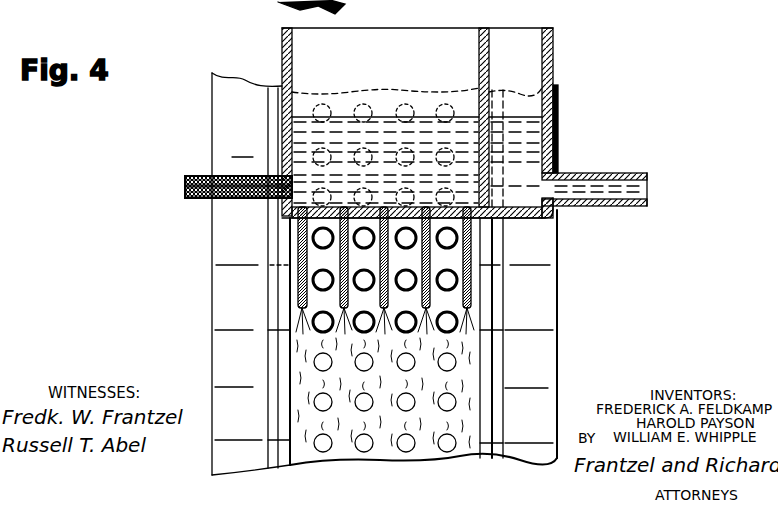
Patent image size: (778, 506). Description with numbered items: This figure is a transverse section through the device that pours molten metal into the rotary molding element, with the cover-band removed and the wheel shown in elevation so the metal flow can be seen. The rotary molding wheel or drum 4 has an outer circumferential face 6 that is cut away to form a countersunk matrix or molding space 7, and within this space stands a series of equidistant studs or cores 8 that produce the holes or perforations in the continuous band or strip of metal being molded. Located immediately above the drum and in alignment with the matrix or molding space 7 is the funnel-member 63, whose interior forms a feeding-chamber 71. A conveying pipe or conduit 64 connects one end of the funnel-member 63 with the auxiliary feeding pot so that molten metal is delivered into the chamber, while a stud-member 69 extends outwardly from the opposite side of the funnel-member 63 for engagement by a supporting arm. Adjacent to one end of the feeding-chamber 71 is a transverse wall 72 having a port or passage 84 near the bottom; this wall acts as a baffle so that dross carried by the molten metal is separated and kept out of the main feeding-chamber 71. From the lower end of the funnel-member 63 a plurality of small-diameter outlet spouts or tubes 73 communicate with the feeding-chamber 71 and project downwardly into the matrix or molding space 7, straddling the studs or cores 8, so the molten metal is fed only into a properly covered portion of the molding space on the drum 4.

The rotary molding wheel or drum 4 is at (557, 312).
The outer circumferential face 6 is at (226, 244).
The matrix or molding space 7 is at (300, 306).
The studs or cores 8 is at (316, 400).
The funnel-member 63 is at (282, 44).
The conveying pipe or conduit 64 is at (626, 172).
The stud-member 69 is at (199, 176).
The feeding-chamber 71 is at (417, 123).
The transverse wall 72 is at (489, 44).
The outlet spouts or tubes 73 is at (340, 258).
The port or passage 84 is at (490, 180).